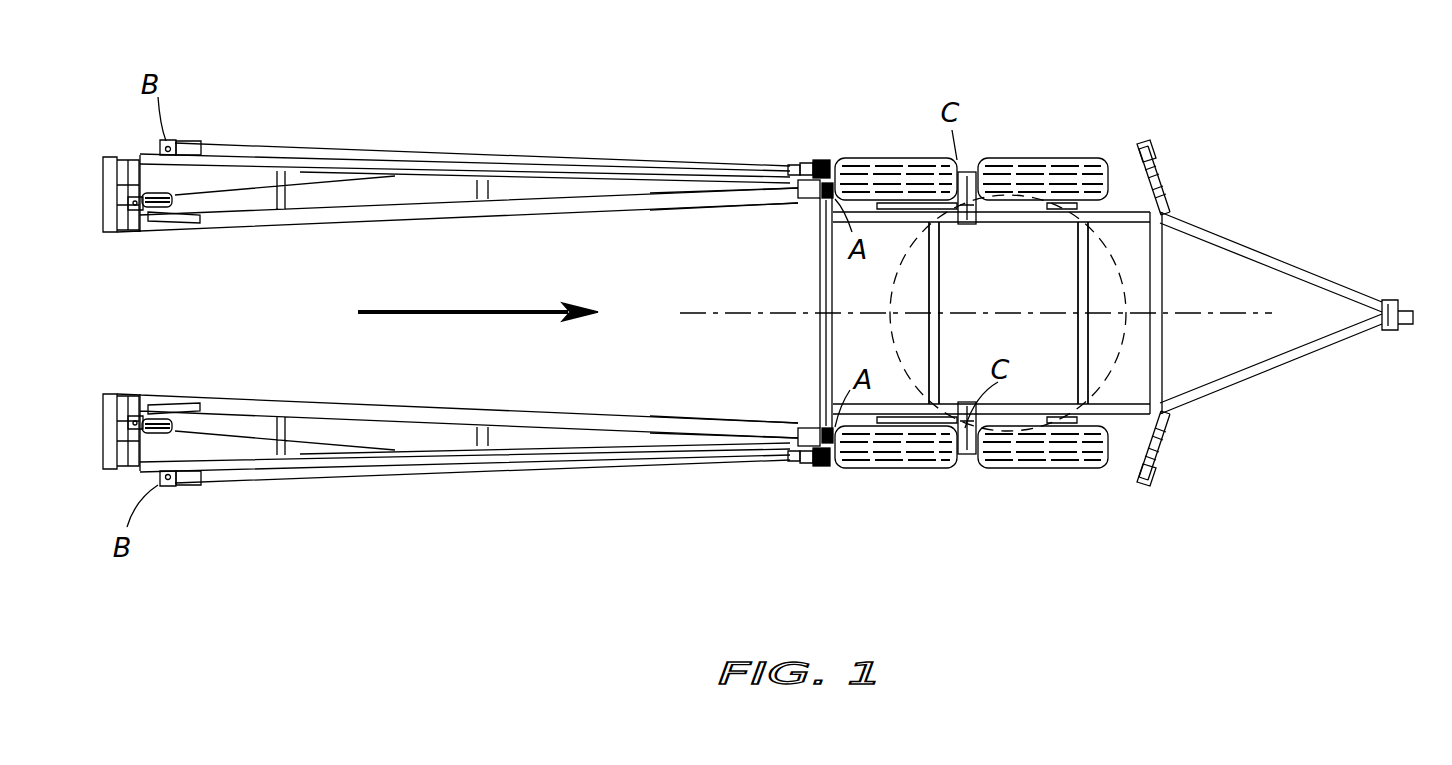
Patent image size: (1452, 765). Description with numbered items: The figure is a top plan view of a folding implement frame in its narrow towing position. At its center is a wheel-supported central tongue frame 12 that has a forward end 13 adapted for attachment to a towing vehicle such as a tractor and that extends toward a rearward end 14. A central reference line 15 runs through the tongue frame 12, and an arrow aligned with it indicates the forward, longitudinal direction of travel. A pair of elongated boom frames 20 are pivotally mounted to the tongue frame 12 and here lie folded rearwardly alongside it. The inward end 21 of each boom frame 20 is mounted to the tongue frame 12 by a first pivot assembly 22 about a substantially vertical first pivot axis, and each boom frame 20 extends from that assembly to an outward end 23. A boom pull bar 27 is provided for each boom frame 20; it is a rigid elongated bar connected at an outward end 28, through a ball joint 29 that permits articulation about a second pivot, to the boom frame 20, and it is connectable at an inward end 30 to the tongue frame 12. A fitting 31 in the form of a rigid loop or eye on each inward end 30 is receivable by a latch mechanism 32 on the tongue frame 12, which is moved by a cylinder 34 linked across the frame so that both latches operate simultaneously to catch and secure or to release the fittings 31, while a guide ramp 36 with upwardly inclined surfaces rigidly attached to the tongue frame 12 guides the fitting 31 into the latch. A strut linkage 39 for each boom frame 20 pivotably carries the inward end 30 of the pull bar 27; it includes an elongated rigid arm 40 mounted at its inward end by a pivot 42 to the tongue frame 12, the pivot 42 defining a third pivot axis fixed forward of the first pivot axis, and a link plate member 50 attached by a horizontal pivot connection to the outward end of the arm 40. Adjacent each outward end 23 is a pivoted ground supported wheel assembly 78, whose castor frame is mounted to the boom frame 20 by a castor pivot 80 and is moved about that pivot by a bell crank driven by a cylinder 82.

The central tongue frame 12 is at (1258, 225).
The forward end 13 is at (1392, 300).
The rearward end 14 is at (820, 303).
The central reference line 15 is at (1250, 316).
The boom frame 20 is at (635, 216).
The inward end 21 is at (770, 205).
The first pivot assembly 22 is at (818, 199).
The outward end 23 is at (130, 229).
The boom pull bar 27 is at (404, 148).
The outward end 28 is at (192, 146).
The ball joint 29 is at (172, 141).
The inward end 30 is at (768, 165).
The fitting 31 is at (812, 165).
The latch mechanism 32 is at (1167, 176).
The cylinder 34 is at (1167, 435).
The guide ramp 36 is at (1153, 150).
The strut linkage 39 is at (915, 160).
The rigid arm 40 is at (901, 162).
The pivot 42 is at (967, 183).
The link plate member 50 is at (818, 158).
The pivoted ground supported wheel assembly 78 is at (176, 203).
The castor pivot 80 is at (137, 198).
The cylinder 82 is at (193, 228).